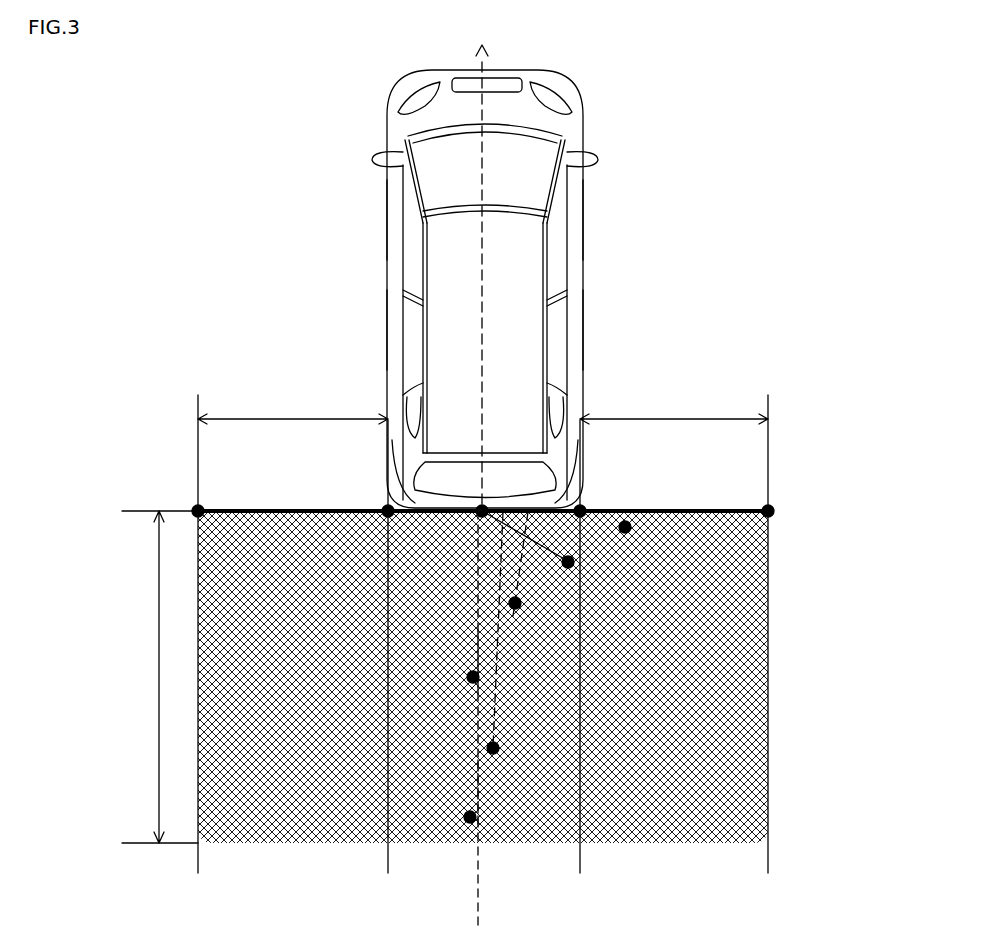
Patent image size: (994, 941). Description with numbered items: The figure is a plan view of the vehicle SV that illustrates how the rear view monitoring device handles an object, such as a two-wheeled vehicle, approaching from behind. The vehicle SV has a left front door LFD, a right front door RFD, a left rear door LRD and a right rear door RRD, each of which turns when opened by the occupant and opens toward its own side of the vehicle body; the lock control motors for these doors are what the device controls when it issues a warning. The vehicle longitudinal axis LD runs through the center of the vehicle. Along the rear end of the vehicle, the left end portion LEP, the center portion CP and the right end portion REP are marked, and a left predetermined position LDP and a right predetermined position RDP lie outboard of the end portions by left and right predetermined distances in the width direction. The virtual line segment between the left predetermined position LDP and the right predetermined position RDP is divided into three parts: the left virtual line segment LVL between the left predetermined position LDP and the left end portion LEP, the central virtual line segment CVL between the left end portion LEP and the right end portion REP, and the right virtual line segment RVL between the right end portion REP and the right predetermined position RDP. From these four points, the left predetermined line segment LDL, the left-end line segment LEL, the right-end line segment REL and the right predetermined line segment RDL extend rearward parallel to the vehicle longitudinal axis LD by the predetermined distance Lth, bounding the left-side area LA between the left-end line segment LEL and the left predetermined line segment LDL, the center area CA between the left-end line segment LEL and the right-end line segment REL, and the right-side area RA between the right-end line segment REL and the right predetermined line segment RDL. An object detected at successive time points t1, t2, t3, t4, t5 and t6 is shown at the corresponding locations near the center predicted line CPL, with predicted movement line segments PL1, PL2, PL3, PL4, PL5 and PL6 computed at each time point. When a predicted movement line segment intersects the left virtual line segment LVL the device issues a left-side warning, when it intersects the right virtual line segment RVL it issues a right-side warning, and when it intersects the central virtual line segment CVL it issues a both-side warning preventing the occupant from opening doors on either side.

The vehicle SV is at (583, 130).
The vehicle longitudinal axis LD is at (488, 53).
The left front door LFD is at (387, 218).
The right front door RFD is at (583, 218).
The left rear door LRD is at (387, 328).
The right rear door RRD is at (583, 328).
The predetermined distance Lth is at (155, 677).
The left virtual line segment LVL is at (290, 509).
The central virtual line segment CVL is at (440, 514).
The right virtual line segment RVL is at (675, 509).
The left predetermined position LDP is at (196, 506).
The left end portion LEP is at (386, 506).
The center portion CP is at (495, 506).
The right end portion REP is at (582, 506).
The right predetermined position RDP is at (770, 506).
The left predetermined line segment LDL is at (200, 836).
The left-end line segment LEL is at (388, 836).
The right-end line segment REL is at (580, 834).
The right predetermined line segment RDL is at (768, 836).
The left-side area LA is at (300, 838).
The center area CA is at (433, 836).
The right-side area RA is at (688, 838).
The center predicted line CPL is at (480, 904).
The predicted movement line segment PL1 is at (475, 765).
The predicted movement line segment PL2 is at (500, 700).
The predicted movement line segment PL3 is at (476, 644).
The predicted movement line segment PL4 is at (520, 585).
The predicted movement line segment PL5 is at (583, 528).
The predicted movement line segment PL6 is at (643, 513).
The time point t1 is at (456, 818).
The time point t2 is at (508, 750).
The time point t3 is at (458, 678).
The time point t4 is at (531, 605).
The time point t5 is at (555, 563).
The time point t6 is at (637, 539).